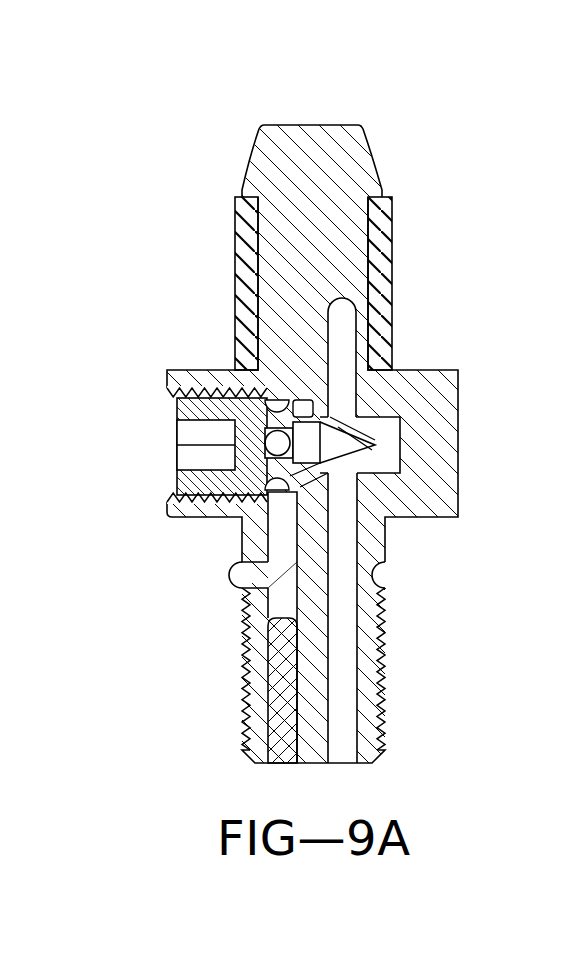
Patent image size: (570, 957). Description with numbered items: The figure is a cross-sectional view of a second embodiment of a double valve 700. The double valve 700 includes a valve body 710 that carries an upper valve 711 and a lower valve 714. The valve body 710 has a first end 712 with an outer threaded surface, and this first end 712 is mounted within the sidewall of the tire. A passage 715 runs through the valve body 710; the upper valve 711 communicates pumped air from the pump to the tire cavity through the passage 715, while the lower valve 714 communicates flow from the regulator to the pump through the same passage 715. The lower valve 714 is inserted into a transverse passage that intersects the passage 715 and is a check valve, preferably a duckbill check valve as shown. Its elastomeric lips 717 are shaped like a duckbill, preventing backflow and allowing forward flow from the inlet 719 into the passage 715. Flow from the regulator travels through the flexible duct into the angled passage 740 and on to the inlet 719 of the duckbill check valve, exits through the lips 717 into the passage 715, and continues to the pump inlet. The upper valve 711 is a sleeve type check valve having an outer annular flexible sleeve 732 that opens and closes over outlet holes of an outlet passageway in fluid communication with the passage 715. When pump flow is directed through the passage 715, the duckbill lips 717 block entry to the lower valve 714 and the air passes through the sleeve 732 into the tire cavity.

The double valve 700 is at (172, 193).
The valve body 710 is at (430, 370).
The upper valve 711 is at (435, 263).
The first end 712 is at (377, 760).
The lower valve 714 is at (145, 480).
The passage 715 is at (337, 645).
The elastomeric lips 717 is at (370, 441).
The inlet 719 is at (276, 444).
The outer annular flexible sleeve 732 is at (252, 305).
The angled passage 740 is at (242, 575).